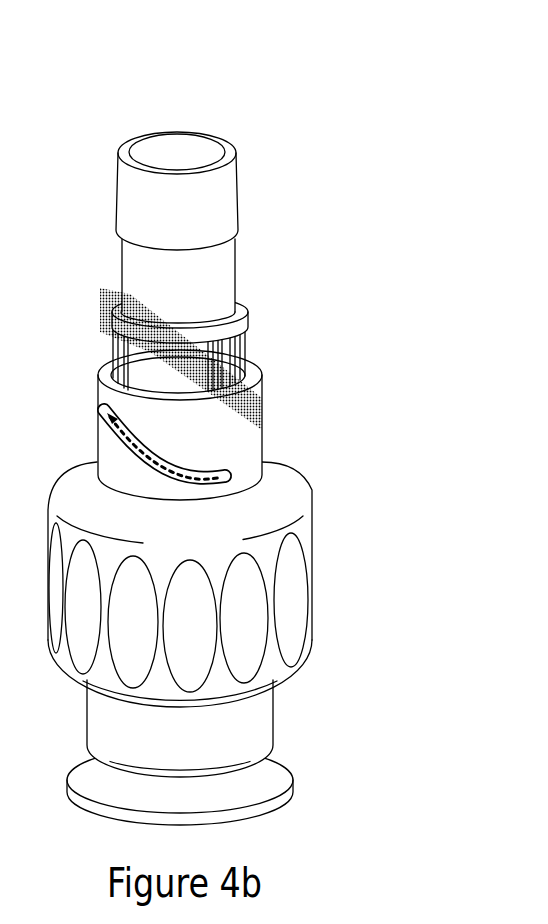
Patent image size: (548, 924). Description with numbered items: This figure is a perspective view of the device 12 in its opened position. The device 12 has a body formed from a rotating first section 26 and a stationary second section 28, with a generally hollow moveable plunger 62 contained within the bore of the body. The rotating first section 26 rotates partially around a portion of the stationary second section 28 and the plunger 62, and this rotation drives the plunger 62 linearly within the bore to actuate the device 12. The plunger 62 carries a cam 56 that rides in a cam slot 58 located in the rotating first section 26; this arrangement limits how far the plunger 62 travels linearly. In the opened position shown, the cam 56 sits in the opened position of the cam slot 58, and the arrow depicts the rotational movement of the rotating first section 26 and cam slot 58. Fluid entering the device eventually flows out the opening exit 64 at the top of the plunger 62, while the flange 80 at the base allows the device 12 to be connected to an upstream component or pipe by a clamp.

The device 12 is at (194, 433).
The rotating first section 26 is at (288, 503).
The stationary second section 28 is at (197, 751).
The cam 56 is at (100, 412).
The cam slot 58 is at (187, 474).
The plunger 62 is at (199, 171).
The opening exit 64 is at (143, 153).
The flange 80 is at (225, 815).